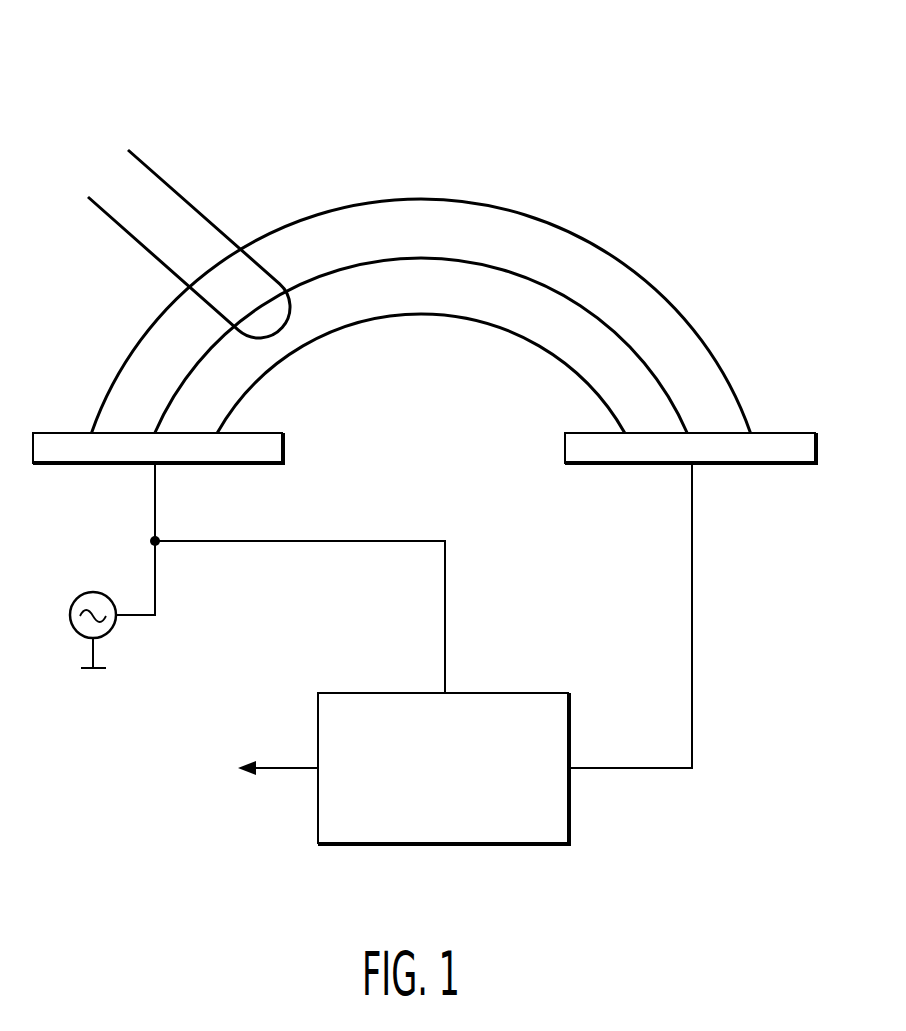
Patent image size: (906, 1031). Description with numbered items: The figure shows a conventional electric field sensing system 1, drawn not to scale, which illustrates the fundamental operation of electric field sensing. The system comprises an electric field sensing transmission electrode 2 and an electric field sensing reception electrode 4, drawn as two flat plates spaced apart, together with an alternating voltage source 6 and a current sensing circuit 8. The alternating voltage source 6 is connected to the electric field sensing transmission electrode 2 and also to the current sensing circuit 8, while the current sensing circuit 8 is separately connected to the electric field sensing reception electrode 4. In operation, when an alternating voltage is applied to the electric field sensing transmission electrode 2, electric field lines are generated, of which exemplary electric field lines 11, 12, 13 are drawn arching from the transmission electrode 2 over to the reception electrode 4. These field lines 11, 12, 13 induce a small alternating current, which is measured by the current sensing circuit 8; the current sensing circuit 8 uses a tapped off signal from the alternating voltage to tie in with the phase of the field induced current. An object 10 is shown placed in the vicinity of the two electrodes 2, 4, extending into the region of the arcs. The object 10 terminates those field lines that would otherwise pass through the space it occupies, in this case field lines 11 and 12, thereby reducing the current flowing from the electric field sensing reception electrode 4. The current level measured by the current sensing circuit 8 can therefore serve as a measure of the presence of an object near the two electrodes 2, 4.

The electric field sensing system 1 is at (572, 122).
The electric field sensing transmission electrode 2 is at (53, 433).
The electric field sensing reception electrode 4 is at (565, 445).
The alternating voltage source 6 is at (74, 600).
The current sensing circuit 8 is at (568, 820).
The object 10 is at (168, 185).
The electric field line 11 is at (607, 248).
The electric field line 12 is at (638, 348).
The electric field line 13 is at (432, 315).